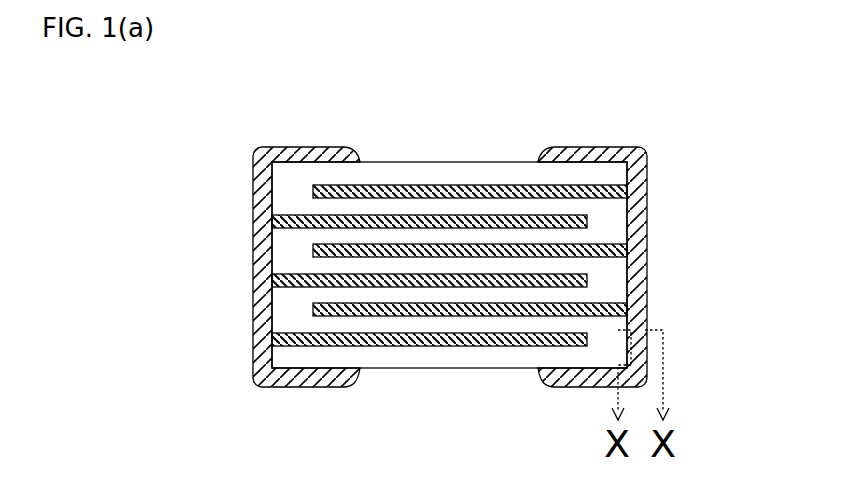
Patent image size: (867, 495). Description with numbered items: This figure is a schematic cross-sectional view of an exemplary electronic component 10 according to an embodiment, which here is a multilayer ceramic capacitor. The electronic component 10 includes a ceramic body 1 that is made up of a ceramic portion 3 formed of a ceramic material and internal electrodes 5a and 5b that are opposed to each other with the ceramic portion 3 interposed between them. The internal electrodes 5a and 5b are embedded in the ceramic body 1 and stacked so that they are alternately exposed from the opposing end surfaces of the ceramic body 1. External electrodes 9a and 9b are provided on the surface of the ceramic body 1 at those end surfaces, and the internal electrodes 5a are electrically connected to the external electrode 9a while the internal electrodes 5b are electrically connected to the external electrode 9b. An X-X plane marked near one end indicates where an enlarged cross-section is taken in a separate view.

The ceramic body 1 is at (553, 83).
The ceramic portion 3 is at (393, 210).
The internal electrode 5a is at (302, 214).
The internal electrode 5b is at (489, 184).
The external electrode 9a is at (252, 187).
The external electrode 9b is at (647, 180).
The electronic component 10 is at (707, 402).